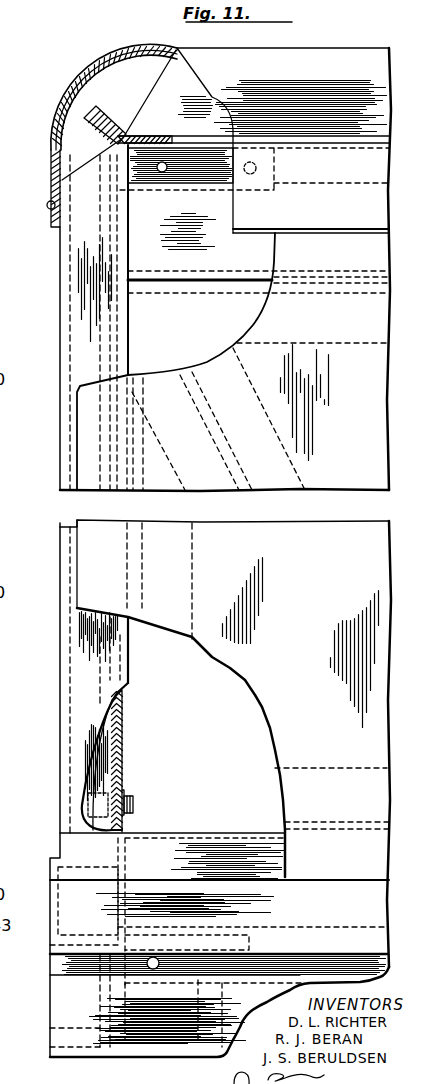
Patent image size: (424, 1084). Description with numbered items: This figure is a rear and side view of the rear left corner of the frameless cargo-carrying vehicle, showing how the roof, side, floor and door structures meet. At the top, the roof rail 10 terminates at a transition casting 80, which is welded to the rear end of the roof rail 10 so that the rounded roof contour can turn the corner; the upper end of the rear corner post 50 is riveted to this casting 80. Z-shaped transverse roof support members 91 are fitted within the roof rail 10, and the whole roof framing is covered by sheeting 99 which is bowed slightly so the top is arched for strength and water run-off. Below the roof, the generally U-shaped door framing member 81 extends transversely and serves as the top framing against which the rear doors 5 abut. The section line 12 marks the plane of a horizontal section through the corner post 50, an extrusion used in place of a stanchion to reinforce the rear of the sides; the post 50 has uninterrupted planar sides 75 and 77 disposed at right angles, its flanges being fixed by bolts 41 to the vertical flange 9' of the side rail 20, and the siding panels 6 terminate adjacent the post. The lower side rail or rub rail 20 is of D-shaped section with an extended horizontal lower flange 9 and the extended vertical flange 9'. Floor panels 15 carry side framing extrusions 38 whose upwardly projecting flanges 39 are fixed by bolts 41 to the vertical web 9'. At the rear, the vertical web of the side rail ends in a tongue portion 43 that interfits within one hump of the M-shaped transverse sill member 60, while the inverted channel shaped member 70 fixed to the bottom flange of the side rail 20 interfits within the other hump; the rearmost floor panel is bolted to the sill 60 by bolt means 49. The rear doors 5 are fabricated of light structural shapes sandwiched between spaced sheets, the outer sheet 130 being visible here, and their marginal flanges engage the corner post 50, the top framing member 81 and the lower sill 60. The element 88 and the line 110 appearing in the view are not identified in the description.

The casting 80 is at (140, 109).
The transverse roof support members 91 is at (212, 124).
The bracket 88 is at (222, 183).
The sheeting 99 is at (331, 219).
The door framing member 81 is at (260, 259).
The dashed partition line 110 is at (340, 345).
The outer sheet member 130 is at (358, 431).
The section line 12- 12 is at (40, 148).
The roof rail 10 is at (54, 232).
The rear corner post 50 is at (52, 468).
The rear doors 5 is at (300, 492).
The planar side of corner post 77 is at (60, 627).
The planar side of corner post 75 is at (75, 700).
The panels or sheets 6 is at (116, 713).
The vertical flange 9' is at (129, 761).
The outwardly projecting flange 39 is at (123, 792).
The bolts 41 is at (133, 805).
The floor panels 15 is at (192, 836).
The side framing extrusions 38 is at (150, 927).
The tongue portion 43 is at (58, 917).
The transverse sill and framing member 60 is at (330, 952).
The horizontal lower flange 9 is at (82, 1001).
The bolt means 49 is at (155, 970).
The inverted channel shaped member 70 is at (100, 1028).
The lower side rail 20 is at (47, 918).